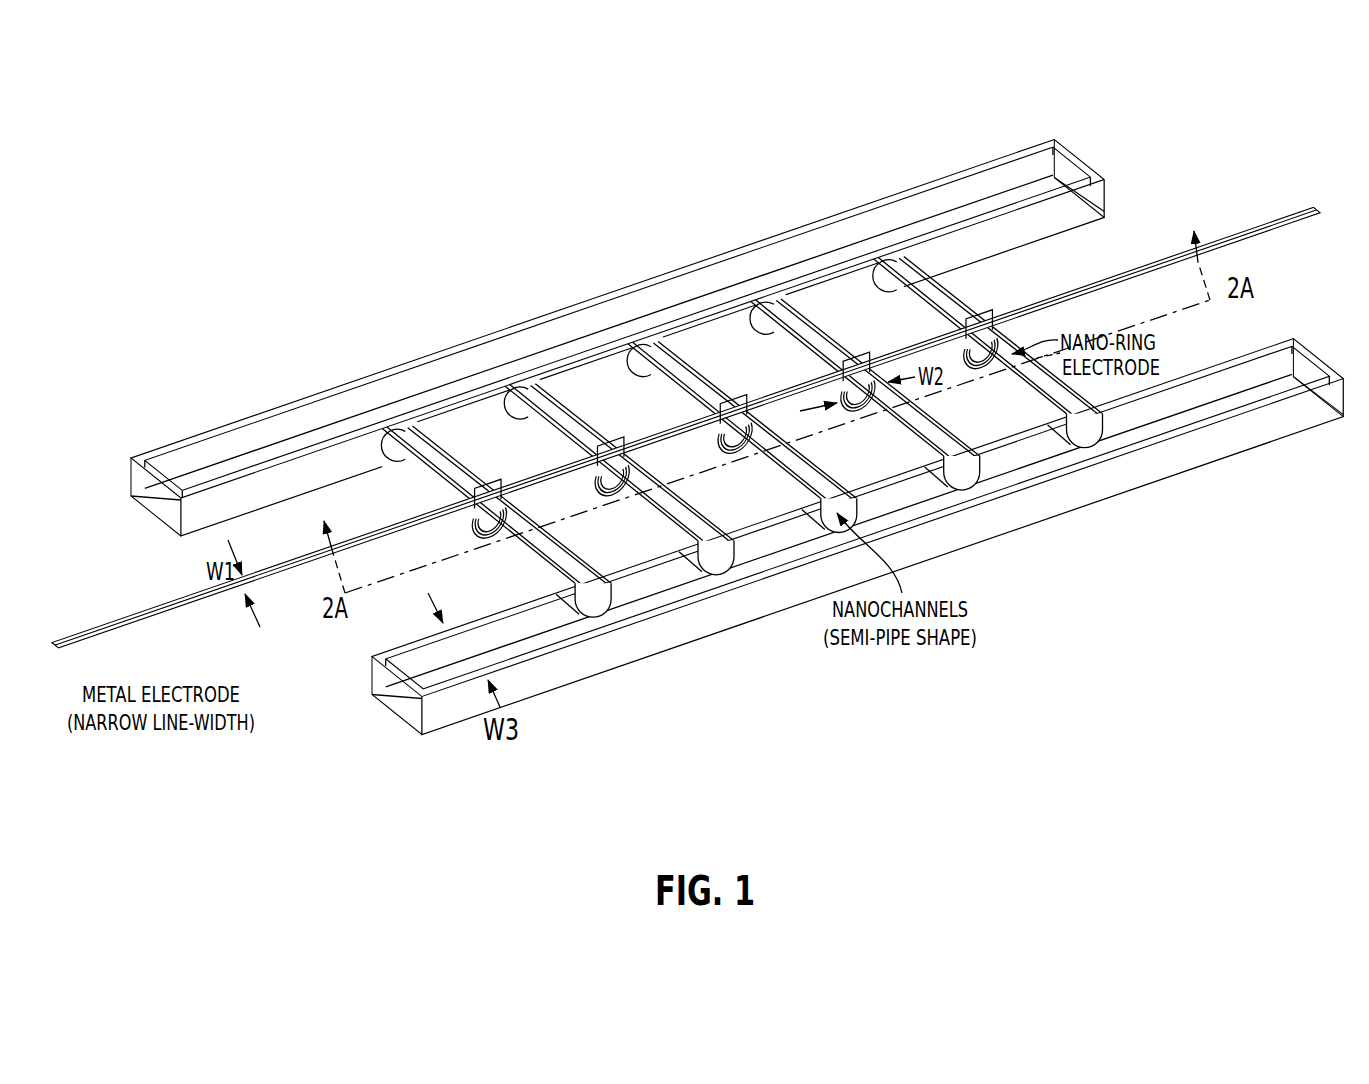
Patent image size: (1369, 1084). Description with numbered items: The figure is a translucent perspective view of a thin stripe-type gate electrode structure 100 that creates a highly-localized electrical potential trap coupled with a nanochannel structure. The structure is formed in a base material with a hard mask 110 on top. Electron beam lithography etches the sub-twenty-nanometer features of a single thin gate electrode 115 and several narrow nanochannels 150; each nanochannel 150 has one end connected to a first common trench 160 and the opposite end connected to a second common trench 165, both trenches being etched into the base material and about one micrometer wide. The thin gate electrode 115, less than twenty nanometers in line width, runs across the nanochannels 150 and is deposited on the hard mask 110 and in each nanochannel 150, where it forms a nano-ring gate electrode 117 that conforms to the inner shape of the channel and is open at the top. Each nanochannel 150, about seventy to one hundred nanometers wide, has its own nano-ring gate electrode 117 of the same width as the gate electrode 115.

The thin stripe-type gate electrode structure 100 is at (330, 247).
The hard mask 110 is at (141, 462).
The thin gate electrode 115 is at (186, 612).
The nano-ring gate electrode 117 is at (493, 490).
The nanochannels 150 is at (400, 422).
The first common trench 160 is at (1031, 158).
The second common trench 165 is at (1250, 400).